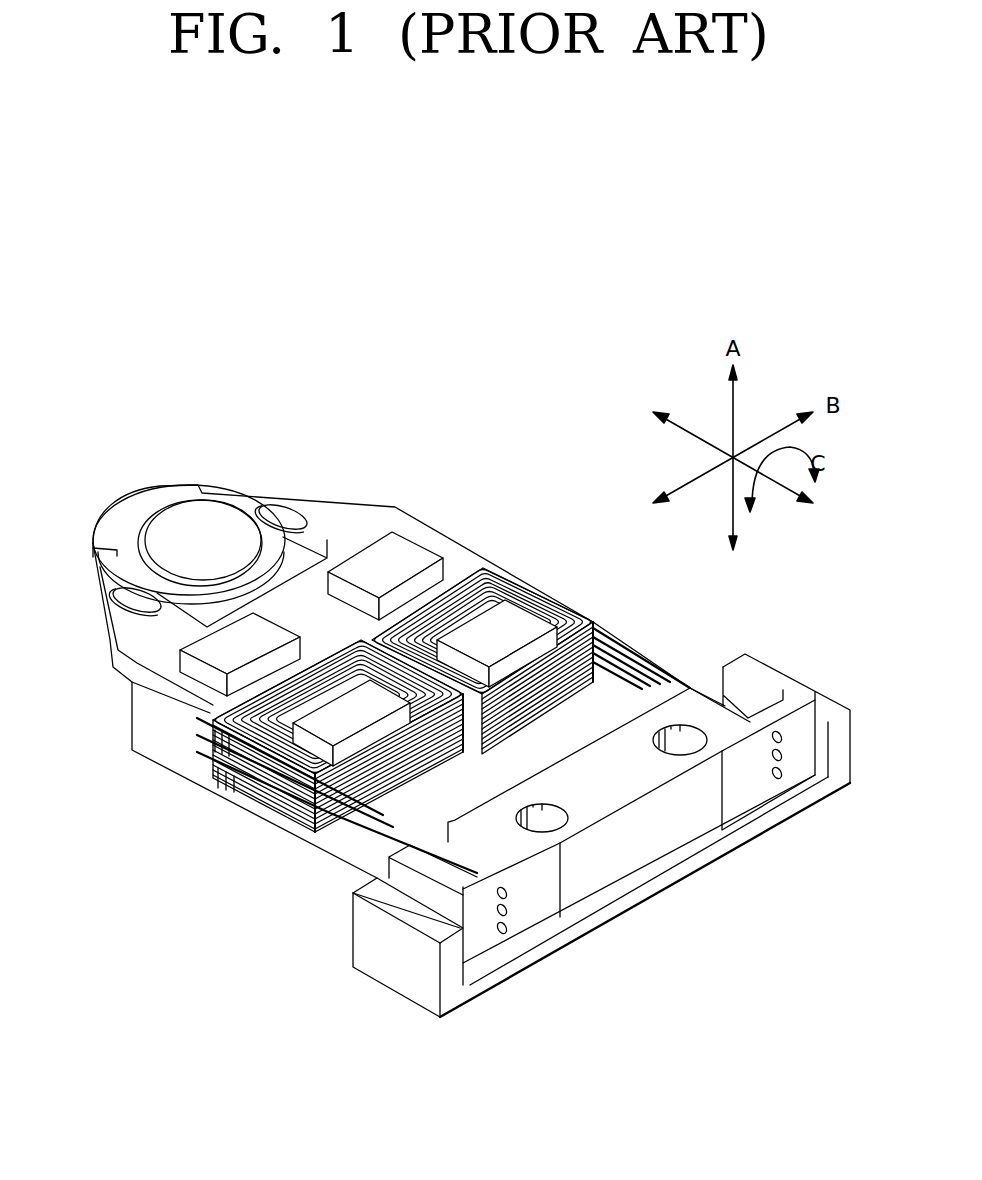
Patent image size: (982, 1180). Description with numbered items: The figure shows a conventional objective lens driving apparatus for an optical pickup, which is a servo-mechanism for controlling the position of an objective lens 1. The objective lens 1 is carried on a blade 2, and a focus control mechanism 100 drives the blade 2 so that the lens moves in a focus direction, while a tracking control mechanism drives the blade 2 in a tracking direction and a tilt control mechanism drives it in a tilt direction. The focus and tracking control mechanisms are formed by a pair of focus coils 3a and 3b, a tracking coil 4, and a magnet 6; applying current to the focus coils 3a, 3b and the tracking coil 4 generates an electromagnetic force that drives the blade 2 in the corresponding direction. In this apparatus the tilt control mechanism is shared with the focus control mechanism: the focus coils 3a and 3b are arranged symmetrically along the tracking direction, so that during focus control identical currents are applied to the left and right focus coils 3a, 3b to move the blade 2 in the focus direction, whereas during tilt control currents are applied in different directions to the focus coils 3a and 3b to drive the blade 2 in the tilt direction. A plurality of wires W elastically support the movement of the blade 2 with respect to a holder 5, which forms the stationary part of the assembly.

The objective lens 1 is at (175, 518).
The blade 2 is at (313, 510).
The focus coil 3a is at (557, 693).
The focus coil 3b is at (425, 765).
The tracking coil 4 is at (460, 583).
The holder 5 is at (588, 808).
The magnet 6 is at (265, 643).
The wires W is at (647, 703).
The focus control mechanism 100 is at (335, 987).